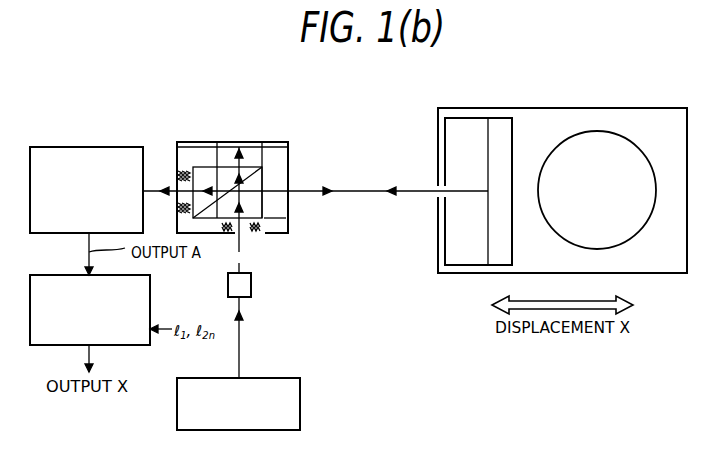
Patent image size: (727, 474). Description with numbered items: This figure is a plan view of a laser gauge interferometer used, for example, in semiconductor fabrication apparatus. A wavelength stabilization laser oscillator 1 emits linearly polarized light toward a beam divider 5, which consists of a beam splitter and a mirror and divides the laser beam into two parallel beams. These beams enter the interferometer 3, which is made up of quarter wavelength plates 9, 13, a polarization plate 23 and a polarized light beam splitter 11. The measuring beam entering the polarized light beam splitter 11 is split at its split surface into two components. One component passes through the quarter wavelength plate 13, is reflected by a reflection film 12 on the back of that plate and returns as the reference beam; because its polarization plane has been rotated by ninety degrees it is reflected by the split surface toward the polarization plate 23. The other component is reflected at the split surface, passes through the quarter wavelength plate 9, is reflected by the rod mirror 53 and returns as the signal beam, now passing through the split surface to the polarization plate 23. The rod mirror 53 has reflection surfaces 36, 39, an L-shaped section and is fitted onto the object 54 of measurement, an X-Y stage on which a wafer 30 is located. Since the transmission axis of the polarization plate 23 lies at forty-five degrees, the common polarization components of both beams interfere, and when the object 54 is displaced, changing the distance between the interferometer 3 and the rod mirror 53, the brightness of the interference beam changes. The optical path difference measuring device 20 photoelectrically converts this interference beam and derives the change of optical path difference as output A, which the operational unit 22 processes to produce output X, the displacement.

The wavelength stabilization laser oscillator 1 is at (300, 398).
The interferometer 3 is at (190, 142).
The beam divider 5 is at (251, 283).
The quarter wavelength plate 9 is at (280, 207).
The polarized light beam splitter 11 is at (256, 205).
The reflection film 12 is at (228, 142).
The quarter wavelength plate 13 is at (262, 157).
The optical path difference measuring device 20 is at (107, 147).
The operational unit 22 is at (150, 292).
The polarization plate 23 is at (193, 167).
The wafer 30 is at (595, 140).
The reflection surface 36 is at (441, 133).
The reflection surface 39 is at (487, 128).
The rod mirror 53 is at (500, 125).
The object of measurement 54 is at (638, 113).